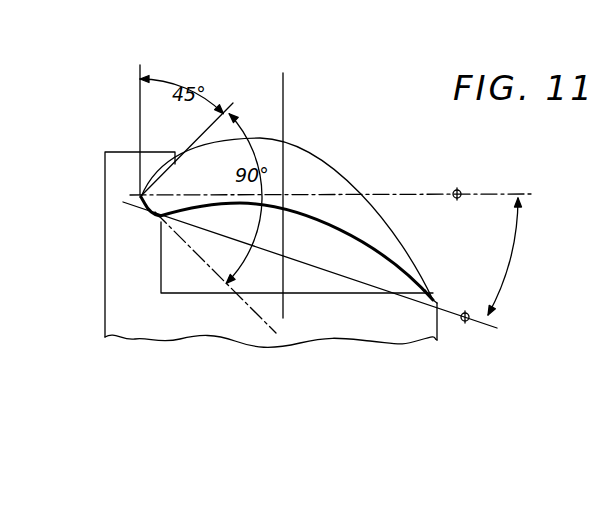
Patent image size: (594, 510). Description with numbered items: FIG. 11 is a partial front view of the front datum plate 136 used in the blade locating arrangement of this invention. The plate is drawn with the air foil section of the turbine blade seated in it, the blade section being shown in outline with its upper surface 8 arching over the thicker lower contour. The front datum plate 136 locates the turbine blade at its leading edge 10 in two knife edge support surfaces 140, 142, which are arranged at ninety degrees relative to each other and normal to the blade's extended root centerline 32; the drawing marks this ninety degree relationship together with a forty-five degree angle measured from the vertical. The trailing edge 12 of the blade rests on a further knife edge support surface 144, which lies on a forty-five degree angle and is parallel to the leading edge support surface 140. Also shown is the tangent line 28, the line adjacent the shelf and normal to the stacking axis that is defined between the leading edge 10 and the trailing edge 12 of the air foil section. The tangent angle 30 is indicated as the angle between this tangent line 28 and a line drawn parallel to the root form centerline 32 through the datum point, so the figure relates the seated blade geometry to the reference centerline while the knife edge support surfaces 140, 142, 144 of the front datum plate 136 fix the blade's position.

The airfoil upper surface 8 is at (317, 176).
The leading edge 10 is at (238, 218).
The trailing edge 12 is at (437, 295).
The tangent line 28 is at (467, 327).
The tangent angle 30 is at (510, 258).
The root form centerline 32 is at (483, 192).
The front datum plate 136 is at (303, 320).
The knife edge support surface 140 is at (157, 222).
The knife edge support surface 142 is at (162, 176).
The knife edge support surface 144 is at (433, 307).